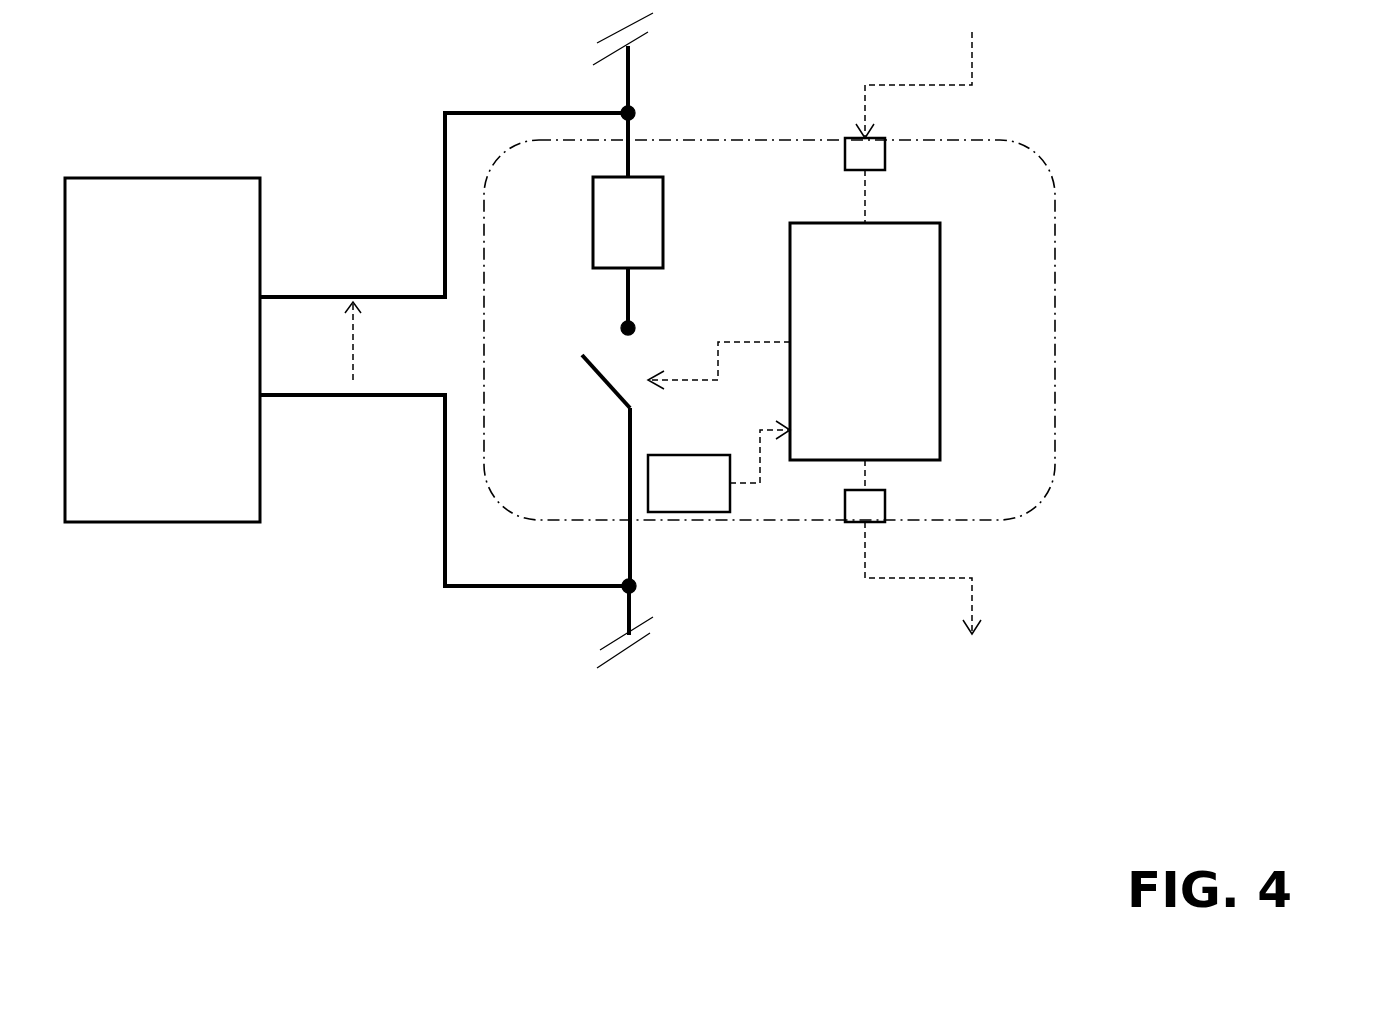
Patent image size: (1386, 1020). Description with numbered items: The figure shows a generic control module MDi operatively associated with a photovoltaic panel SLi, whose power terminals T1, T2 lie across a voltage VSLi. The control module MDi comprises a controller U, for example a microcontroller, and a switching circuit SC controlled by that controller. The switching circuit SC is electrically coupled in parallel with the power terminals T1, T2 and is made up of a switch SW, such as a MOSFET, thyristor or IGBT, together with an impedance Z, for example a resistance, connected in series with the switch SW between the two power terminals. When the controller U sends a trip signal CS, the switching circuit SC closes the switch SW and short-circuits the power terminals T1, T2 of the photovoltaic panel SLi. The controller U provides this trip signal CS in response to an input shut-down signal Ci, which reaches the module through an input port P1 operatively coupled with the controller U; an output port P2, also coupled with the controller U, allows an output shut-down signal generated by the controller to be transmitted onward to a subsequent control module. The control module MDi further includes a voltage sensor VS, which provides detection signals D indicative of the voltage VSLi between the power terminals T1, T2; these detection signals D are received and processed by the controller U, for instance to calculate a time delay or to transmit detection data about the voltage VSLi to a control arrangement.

The photovoltaic panel SLi is at (162, 350).
The voltage between the power terminals VSLi is at (381, 341).
The power terminal T1 is at (633, 95).
The power terminal T2 is at (636, 619).
The impedance Z is at (628, 222).
The switching circuit SC is at (652, 298).
The switch SW is at (598, 382).
The control module MDi is at (1087, 395).
The controller U is at (865, 341).
The input port P1 is at (865, 180).
The output port P2 is at (865, 491).
The input shut-down signal Ci is at (914, 85).
The trip signal CS is at (719, 362).
The detection signals D is at (760, 446).
The voltage sensor VS is at (689, 483).